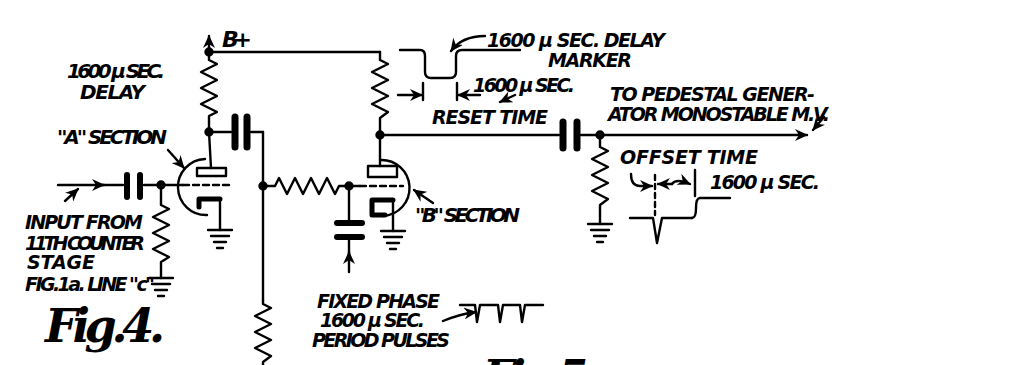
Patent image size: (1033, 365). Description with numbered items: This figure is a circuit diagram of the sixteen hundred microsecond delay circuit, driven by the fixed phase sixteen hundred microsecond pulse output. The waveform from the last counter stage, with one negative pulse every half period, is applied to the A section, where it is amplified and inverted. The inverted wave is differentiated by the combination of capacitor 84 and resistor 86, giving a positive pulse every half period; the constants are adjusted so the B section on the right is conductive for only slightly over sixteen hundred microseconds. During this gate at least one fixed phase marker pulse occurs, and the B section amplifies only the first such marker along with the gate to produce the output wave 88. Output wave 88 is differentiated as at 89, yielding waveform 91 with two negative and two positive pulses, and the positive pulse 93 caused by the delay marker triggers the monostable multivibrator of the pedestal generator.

The capacitor 84 is at (249, 124).
The resistor 86 is at (260, 322).
The output wave 88 is at (432, 42).
The differentiator 89 is at (584, 152).
The waveform 91 is at (661, 234).
The positive pulse 93 is at (703, 200).